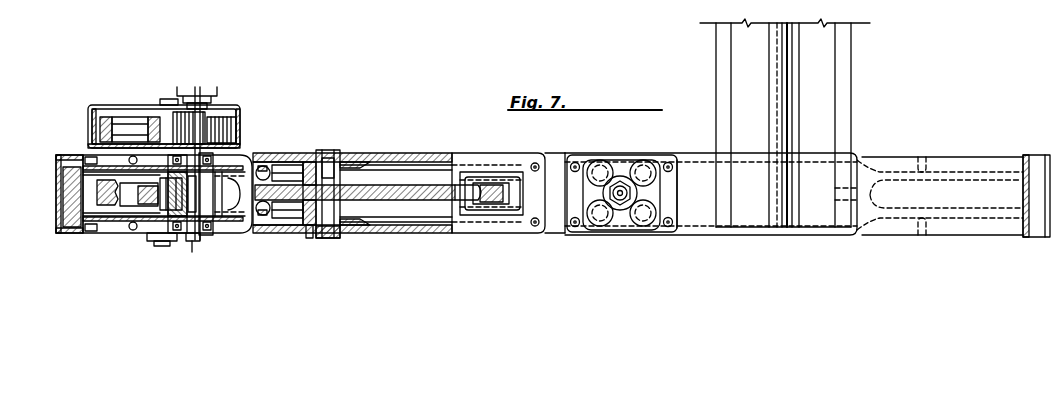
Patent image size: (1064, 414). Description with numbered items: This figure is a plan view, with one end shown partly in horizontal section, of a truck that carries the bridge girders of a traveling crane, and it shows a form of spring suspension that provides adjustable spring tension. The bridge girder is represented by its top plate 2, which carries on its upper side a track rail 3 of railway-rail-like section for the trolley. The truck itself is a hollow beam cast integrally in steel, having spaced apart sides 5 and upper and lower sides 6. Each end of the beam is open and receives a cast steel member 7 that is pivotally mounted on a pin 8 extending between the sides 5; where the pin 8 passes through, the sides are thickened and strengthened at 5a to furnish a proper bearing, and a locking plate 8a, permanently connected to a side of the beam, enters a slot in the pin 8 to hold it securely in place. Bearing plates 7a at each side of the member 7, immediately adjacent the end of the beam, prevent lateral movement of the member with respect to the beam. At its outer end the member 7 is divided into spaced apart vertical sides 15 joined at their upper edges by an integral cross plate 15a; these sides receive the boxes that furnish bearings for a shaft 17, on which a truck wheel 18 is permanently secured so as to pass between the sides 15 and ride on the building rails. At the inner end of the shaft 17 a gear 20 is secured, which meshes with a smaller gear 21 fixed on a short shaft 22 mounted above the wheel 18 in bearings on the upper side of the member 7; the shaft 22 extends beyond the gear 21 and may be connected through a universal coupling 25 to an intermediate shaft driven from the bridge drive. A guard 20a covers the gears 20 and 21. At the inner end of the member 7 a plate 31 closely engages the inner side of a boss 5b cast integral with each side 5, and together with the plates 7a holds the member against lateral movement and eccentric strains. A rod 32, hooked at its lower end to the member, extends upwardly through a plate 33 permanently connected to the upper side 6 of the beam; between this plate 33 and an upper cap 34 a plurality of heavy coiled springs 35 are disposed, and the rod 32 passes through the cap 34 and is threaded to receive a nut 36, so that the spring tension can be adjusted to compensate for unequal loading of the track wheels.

The top plate 2 is at (822, 72).
The track rail 3 is at (784, 97).
The spaced apart sides 5 is at (406, 153).
The thickened portion 5a is at (356, 162).
The boss 5b is at (515, 236).
The upper and lower sides 6 is at (705, 236).
The member 7 is at (392, 201).
The bearing plates 7a is at (280, 162).
The pin 8 is at (330, 153).
The locking plate 8a is at (308, 238).
The vertical sides 15 is at (108, 170).
The cross plate 15a is at (950, 203).
The shaft 17 is at (160, 244).
The truck wheel 18 is at (97, 190).
The gear 20 is at (240, 133).
The guard 20a is at (90, 112).
The smaller gear 21 is at (208, 128).
The short shaft 22 is at (192, 252).
The universal coupling 25 is at (199, 88).
The plate 31 is at (490, 170).
The rod 32 is at (490, 203).
The plate 33 is at (665, 235).
The upper cap 34 is at (622, 233).
The heavy coiled springs 35 is at (622, 176).
The nut 36 is at (606, 212).